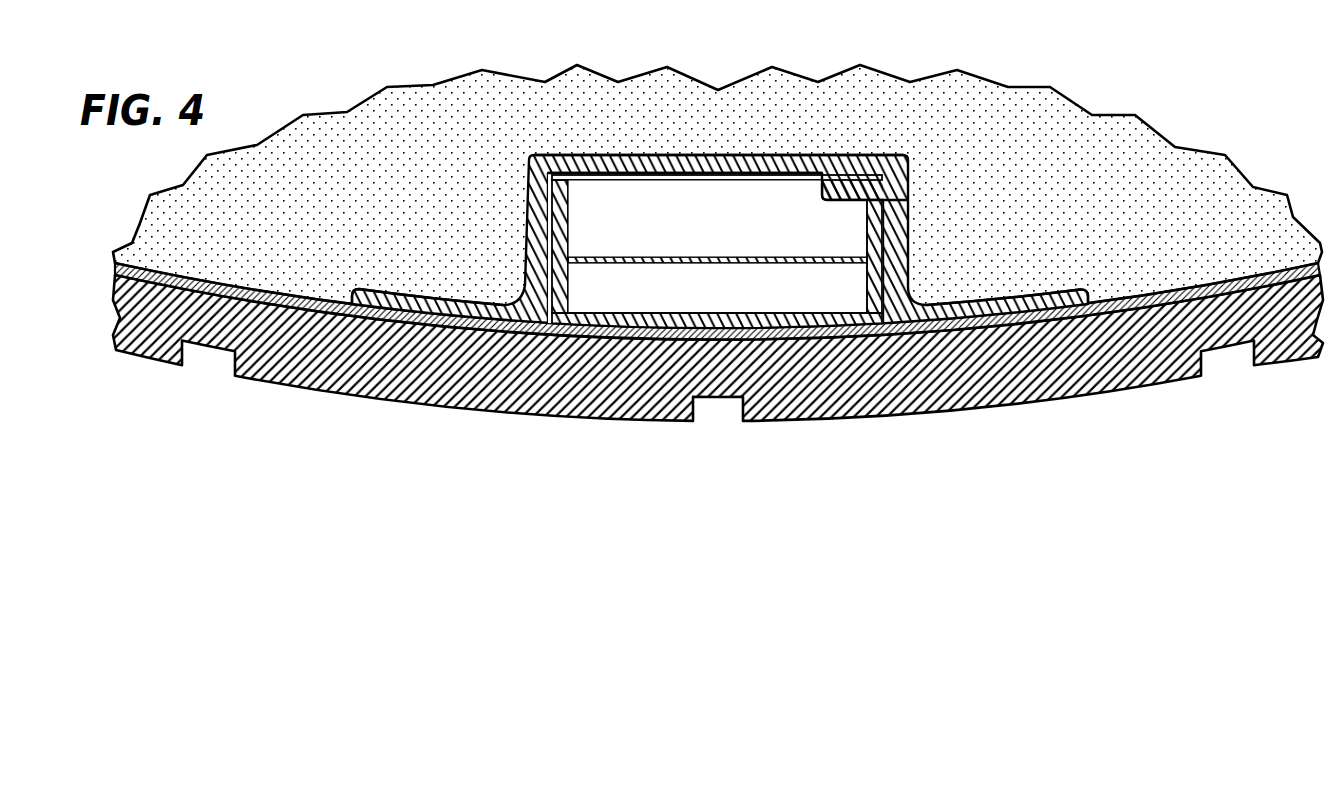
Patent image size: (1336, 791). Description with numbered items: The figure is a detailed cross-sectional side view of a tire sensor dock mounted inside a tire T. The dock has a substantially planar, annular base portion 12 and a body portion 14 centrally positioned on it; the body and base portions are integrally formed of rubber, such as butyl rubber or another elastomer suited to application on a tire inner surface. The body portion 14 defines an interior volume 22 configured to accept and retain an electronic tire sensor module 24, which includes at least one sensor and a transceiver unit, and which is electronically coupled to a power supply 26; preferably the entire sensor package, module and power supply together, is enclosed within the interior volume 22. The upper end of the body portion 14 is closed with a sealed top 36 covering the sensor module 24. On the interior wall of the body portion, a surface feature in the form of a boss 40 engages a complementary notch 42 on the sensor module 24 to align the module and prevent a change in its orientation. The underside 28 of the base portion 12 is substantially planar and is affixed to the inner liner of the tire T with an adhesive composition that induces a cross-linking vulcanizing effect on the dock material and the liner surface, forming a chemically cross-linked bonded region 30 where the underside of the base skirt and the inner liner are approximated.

The tire T is at (153, 362).
The base portion 12 is at (380, 292).
The body portion 14 is at (527, 202).
The interior volume 22 is at (633, 312).
The electronic tire sensor module 24 is at (731, 231).
The power supply 26 is at (731, 298).
The underside of the base portion 28 is at (985, 322).
The chemically cross-linked bonded region 30 is at (366, 315).
The sealed top 36 is at (610, 157).
The boss 40 is at (852, 175).
The notch 42 is at (855, 200).